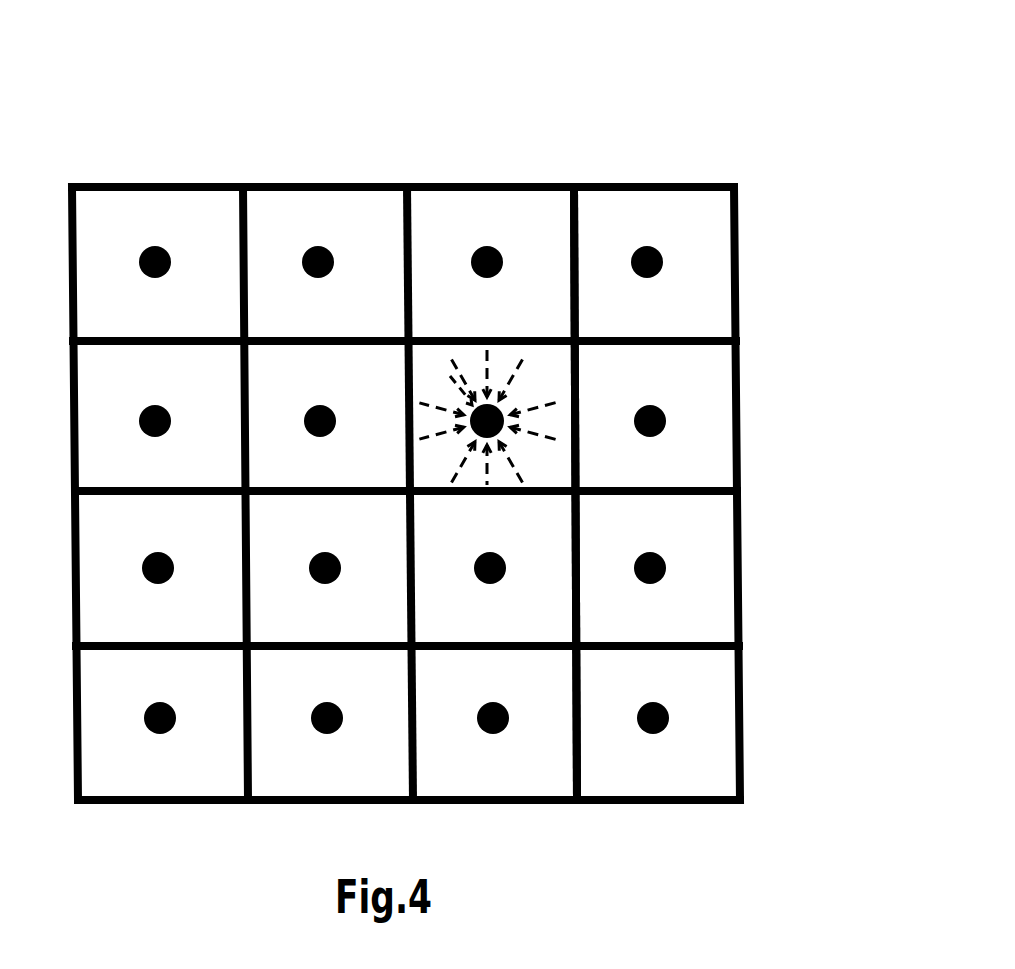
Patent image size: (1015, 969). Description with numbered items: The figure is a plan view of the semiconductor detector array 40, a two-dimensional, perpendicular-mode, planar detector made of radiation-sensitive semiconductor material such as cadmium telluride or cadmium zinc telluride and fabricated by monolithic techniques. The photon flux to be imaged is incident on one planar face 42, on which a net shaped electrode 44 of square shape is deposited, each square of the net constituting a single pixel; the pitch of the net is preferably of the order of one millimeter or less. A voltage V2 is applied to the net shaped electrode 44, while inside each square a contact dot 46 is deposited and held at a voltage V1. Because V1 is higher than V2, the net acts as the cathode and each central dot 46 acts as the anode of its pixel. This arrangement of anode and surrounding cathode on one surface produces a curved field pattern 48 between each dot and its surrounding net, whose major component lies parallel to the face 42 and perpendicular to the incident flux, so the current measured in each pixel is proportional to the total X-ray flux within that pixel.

The semiconductor detector array 40 is at (708, 128).
The planar face 42 is at (698, 238).
The net shaped electrode 44 is at (565, 187).
The contact dot 46 is at (468, 248).
The curved field pattern 48 is at (447, 373).
The voltage applied to contact dots V1 is at (660, 438).
The voltage applied to net shaped electrode V2 is at (735, 341).